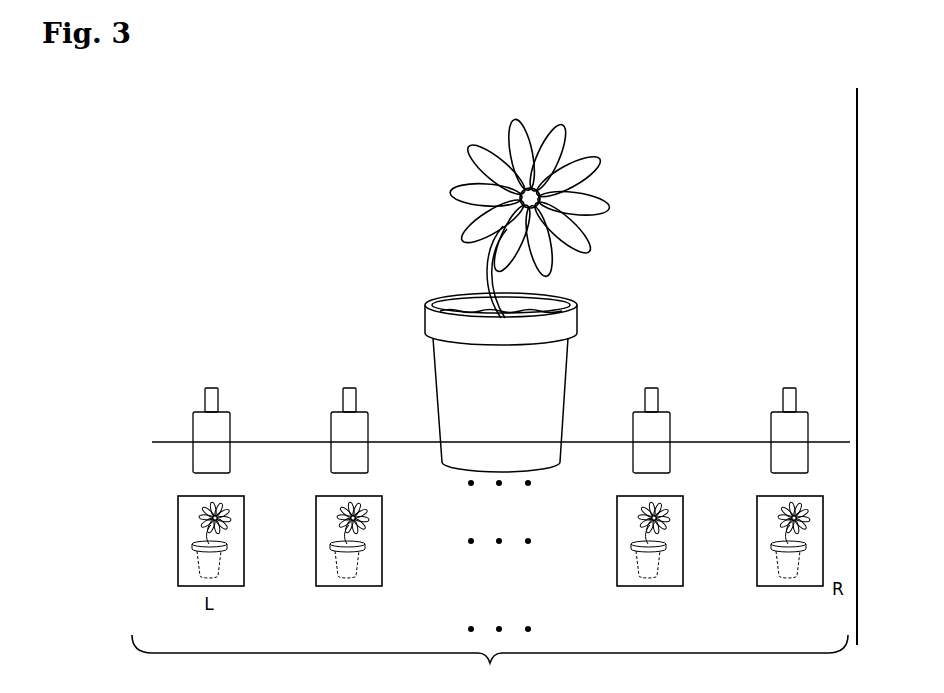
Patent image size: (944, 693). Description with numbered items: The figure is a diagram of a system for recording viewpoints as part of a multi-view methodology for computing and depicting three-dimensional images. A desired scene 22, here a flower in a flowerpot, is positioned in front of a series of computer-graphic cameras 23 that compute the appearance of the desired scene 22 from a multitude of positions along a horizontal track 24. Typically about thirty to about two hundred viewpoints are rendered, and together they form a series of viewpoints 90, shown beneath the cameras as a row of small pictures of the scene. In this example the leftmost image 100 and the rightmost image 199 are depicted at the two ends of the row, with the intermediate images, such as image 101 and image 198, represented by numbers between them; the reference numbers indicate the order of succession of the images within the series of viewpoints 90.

The desired scene 22 is at (655, 216).
The computer-graphic cameras 23 is at (212, 387).
The horizontal track 24 is at (180, 440).
The series of viewpoints 90 is at (490, 664).
The leftmost image 100 is at (211, 568).
The image 101 is at (349, 568).
The image 198 is at (650, 568).
The rightmost image 199 is at (790, 568).